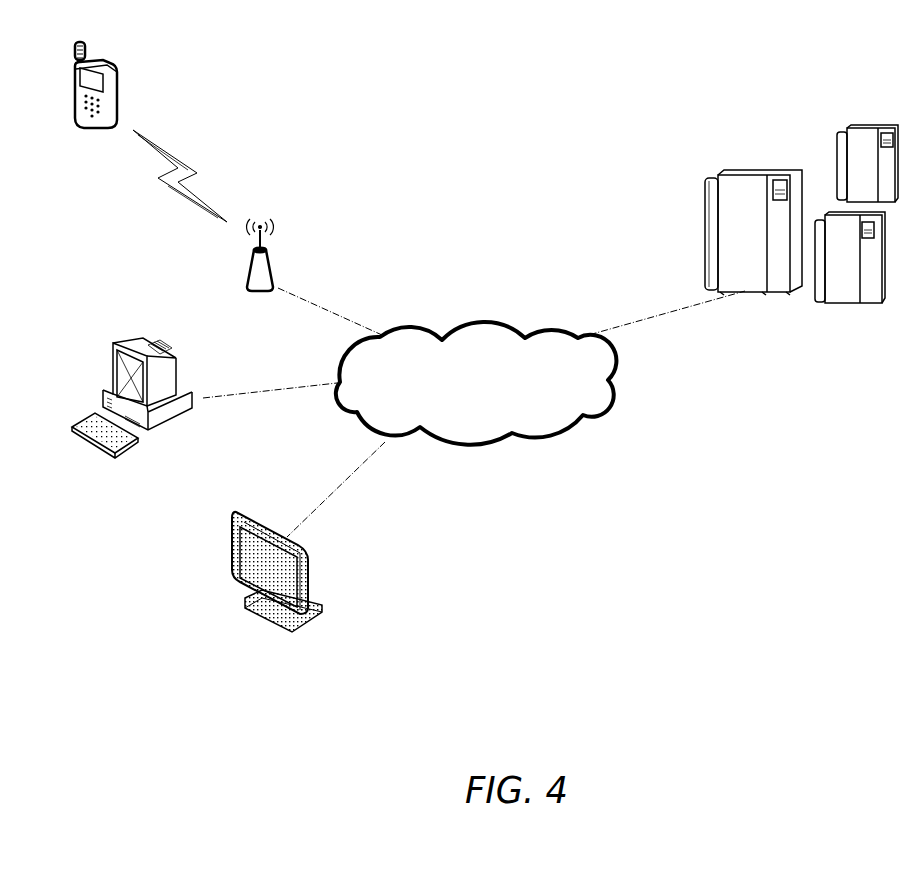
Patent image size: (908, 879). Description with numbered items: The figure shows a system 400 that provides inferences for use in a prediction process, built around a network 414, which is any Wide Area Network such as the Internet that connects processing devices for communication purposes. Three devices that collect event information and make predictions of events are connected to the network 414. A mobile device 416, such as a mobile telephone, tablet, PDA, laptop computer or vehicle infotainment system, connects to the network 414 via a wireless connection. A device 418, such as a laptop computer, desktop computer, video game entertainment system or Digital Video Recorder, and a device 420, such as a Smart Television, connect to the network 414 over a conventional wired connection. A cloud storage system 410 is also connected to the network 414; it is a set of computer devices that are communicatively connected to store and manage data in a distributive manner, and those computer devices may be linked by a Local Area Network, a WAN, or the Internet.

The system 400 is at (537, 107).
The cloud storage system 410 is at (748, 173).
The network 414 is at (480, 322).
The mobile device 416 is at (118, 72).
The device 418 is at (125, 343).
The device 420 is at (240, 513).